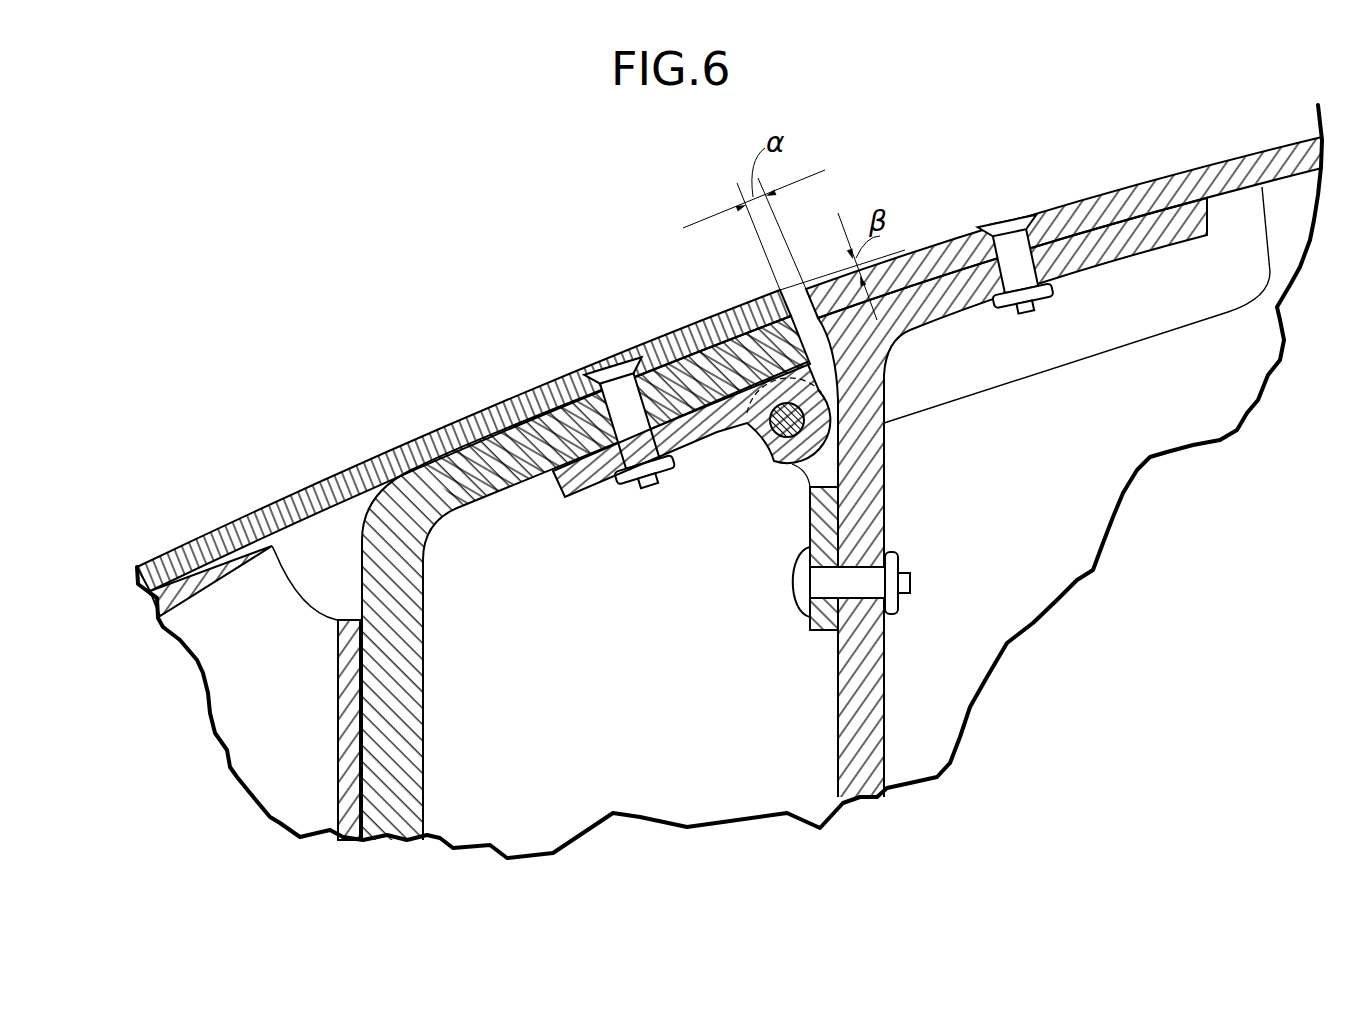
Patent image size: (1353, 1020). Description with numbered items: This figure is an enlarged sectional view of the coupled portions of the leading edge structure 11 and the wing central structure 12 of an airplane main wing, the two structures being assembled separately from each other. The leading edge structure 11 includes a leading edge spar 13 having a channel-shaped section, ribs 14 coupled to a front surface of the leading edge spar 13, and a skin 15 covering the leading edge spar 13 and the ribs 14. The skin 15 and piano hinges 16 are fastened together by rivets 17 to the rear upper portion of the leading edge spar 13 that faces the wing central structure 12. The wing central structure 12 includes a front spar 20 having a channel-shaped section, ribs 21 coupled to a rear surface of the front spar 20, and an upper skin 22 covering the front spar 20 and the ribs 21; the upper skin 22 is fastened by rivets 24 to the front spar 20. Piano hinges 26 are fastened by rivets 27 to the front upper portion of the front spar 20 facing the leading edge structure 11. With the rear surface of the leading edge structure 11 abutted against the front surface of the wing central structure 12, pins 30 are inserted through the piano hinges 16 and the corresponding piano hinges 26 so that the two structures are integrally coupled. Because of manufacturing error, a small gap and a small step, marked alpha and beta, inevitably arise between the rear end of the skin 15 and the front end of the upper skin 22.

The leading edge structure 11 is at (473, 542).
The wing central structure 12 is at (1064, 238).
The leading edge spar 13 is at (400, 744).
The ribs 14 is at (297, 627).
The skin 15 is at (345, 490).
The piano hinges 16 is at (712, 430).
The rivets 17 is at (612, 365).
The front spar 20 is at (880, 717).
The ribs 21 is at (1152, 364).
The upper skin 22 is at (1212, 163).
The rivets 24 is at (998, 226).
The piano hinges 26 is at (812, 520).
The rivets 27 is at (795, 596).
The pins 30 is at (760, 450).